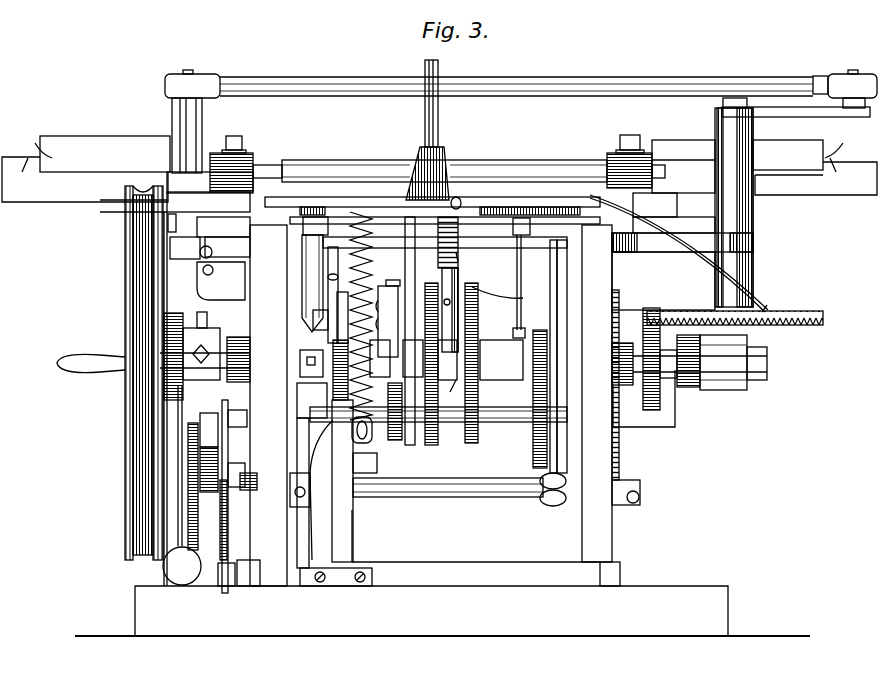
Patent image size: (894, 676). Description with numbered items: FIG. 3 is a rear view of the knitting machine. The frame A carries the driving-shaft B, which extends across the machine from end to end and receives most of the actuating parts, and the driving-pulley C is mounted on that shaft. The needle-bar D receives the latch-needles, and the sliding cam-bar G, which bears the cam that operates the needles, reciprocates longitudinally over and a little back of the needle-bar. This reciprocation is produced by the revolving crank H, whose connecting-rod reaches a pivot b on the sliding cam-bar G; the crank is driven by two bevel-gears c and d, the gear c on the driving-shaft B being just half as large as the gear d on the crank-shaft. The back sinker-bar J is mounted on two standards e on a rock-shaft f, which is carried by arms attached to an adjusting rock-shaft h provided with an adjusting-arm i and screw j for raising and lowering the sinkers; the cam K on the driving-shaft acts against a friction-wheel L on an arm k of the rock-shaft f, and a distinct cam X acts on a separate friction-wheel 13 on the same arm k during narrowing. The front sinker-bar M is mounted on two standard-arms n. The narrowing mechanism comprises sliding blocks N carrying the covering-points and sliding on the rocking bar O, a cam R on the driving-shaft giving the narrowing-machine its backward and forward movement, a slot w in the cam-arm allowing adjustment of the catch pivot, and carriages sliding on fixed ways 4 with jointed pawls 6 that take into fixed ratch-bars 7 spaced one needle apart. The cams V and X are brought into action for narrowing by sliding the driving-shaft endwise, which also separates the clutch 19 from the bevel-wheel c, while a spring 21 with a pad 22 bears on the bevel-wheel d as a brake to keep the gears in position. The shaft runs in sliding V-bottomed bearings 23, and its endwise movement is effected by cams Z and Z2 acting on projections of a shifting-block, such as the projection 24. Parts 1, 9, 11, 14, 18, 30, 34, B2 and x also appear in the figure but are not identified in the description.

The connecting rod 1 is at (521, 89).
The fixed ways 4 is at (439, 184).
The jointed pawls 6 is at (436, 142).
The fixed ratch-bars 7 is at (428, 169).
The slide box 9 is at (431, 154).
The main shaft 11 is at (444, 171).
The friction-wheel 13 is at (437, 242).
The lever 14 is at (449, 392).
The clutch block 18 is at (413, 358).
The clutch 19 is at (723, 362).
The spring 21 is at (767, 302).
The pad 22 is at (305, 388).
The bearings 23 is at (430, 361).
The projection 24 is at (239, 496).
The cable 30 is at (679, 253).
The wire 34 is at (186, 424).
The frame A is at (442, 414).
The driving-shaft B is at (575, 347).
The rack B' B2 is at (203, 504).
The driving-pulley C is at (110, 373).
The needle-bar D is at (209, 452).
The sliding cam-bar G is at (476, 186).
The revolving crank H is at (796, 115).
The back sinker-bar J is at (445, 316).
The cam K is at (478, 363).
The friction-wheel L is at (461, 261).
The front sinker-bar M is at (315, 226).
The sliding blocks N is at (523, 278).
The rocking bar O is at (734, 202).
The cam R is at (540, 390).
The cam V is at (388, 318).
The cam X is at (429, 364).
The cam Z is at (192, 355).
The cam Z2 is at (312, 364).
The pivot b is at (187, 135).
The bevel-gear c is at (643, 359).
The bevel-gear d is at (735, 309).
The standards e is at (430, 295).
The rock-shaft f is at (438, 411).
The adjusting rock-shaft h is at (428, 490).
The adjusting-arm i is at (298, 493).
The screw j is at (309, 500).
The arm k is at (448, 324).
The standard-arms n is at (434, 354).
The slot w is at (340, 370).
The pin x is at (176, 223).